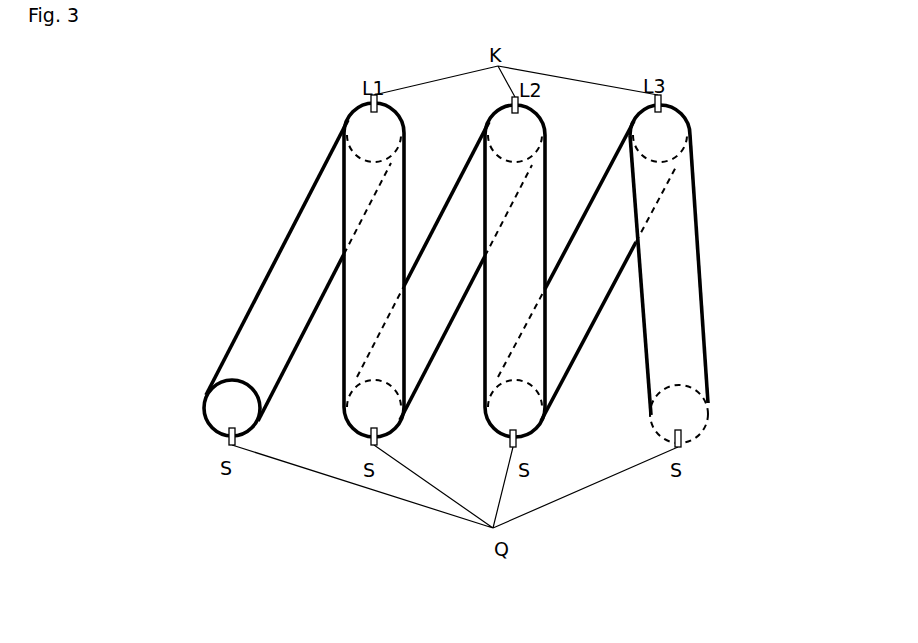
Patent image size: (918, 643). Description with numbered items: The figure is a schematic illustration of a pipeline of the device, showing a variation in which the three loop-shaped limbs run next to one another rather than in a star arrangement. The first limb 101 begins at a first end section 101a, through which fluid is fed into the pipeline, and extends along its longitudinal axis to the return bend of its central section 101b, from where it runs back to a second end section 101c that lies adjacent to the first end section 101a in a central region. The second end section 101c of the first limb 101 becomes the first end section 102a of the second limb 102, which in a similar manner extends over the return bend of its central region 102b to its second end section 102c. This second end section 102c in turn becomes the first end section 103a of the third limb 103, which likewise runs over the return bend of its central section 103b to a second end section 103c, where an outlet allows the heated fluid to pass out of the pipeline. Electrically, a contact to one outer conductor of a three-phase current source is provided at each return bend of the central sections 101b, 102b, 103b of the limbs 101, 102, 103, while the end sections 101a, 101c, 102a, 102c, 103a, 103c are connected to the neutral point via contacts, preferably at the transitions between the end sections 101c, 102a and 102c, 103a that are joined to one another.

The first limb 101 is at (305, 261).
The first end section of the first limb 101a is at (217, 383).
The central section of the first limb 101b is at (349, 116).
The second end section of the first limb 101c is at (341, 371).
The second limb 102 is at (472, 266).
The first end section of the second limb 102a is at (410, 406).
The central region of the second limb 102b is at (491, 116).
The second end section of the second limb 102c is at (481, 362).
The third limb 103 is at (655, 263).
The first end section of the third limb 103a is at (562, 381).
The central section of the third limb 103b is at (681, 115).
The second end section of the third limb 103c is at (707, 378).